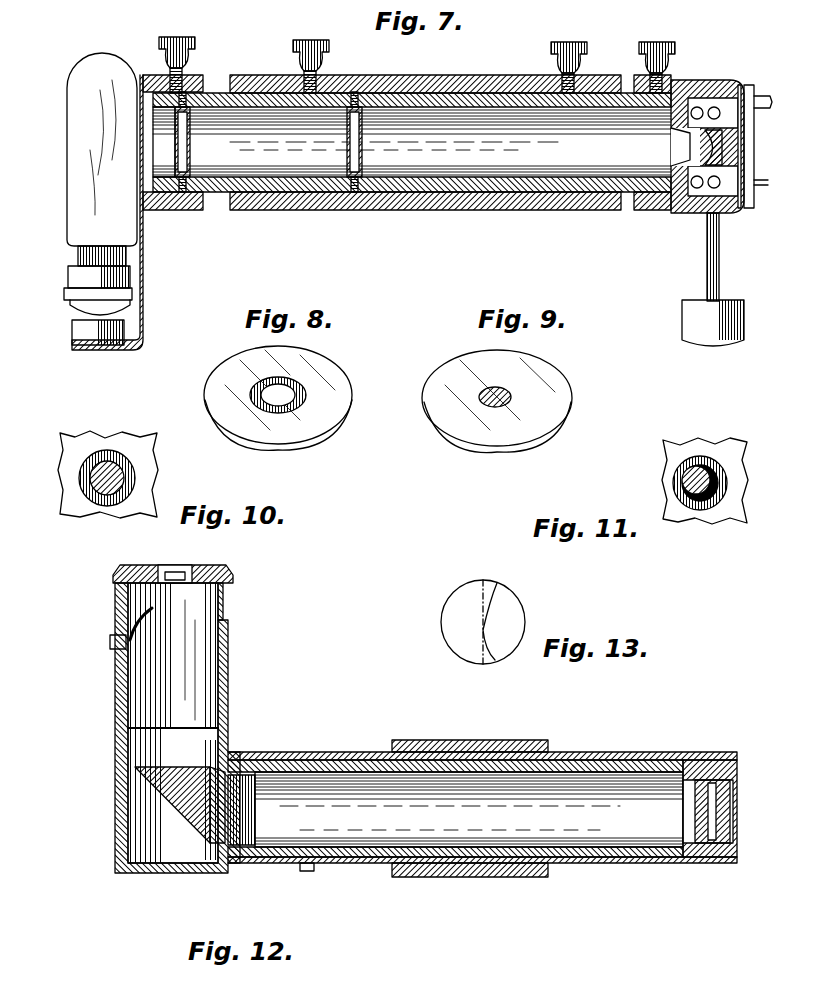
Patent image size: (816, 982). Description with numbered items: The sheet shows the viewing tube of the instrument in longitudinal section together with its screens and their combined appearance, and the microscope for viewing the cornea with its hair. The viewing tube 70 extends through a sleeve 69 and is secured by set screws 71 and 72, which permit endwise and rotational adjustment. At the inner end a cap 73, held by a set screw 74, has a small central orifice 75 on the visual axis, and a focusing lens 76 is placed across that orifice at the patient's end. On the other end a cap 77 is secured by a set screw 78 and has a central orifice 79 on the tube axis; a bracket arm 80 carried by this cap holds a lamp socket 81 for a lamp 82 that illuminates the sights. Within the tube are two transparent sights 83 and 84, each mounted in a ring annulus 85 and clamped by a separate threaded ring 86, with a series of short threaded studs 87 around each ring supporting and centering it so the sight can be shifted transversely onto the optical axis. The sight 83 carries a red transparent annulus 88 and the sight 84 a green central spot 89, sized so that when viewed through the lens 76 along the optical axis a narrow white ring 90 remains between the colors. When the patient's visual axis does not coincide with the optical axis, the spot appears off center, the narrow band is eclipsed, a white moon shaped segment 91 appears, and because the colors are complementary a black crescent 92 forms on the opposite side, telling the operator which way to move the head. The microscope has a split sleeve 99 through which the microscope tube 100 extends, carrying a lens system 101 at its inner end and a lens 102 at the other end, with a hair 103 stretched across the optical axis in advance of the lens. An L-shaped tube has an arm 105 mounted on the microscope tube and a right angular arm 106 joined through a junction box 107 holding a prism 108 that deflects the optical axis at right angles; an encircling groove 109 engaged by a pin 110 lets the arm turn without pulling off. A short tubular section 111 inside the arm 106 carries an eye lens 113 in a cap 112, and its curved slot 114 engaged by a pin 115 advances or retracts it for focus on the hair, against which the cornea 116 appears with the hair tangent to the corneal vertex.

In FIG. 7, the sleeve 69 is at (402, 210).
In FIG. 7, the viewing tube 70 is at (512, 192).
In FIG. 7, the set screw 71 is at (312, 50).
In FIG. 7, the set screw 72 is at (566, 62).
In FIG. 7, the cap 73 is at (655, 210).
In FIG. 7, the set screw 74 is at (660, 55).
In FIG. 7, the central orifice 75 is at (690, 150).
In FIG. 7, the focusing lens 76 is at (726, 148).
In FIG. 7, the cap 77 is at (170, 210).
In FIG. 7, the set screw 78 is at (192, 50).
In FIG. 7, the central orifice 79 is at (150, 145).
In FIG. 7, the bracket arm 80 is at (150, 275).
In FIG. 7, the lamp socket 81 is at (88, 283).
In FIG. 7, the lamp 82 is at (98, 218).
In FIG. 7, the sight 83 is at (160, 150).
In FIG. 8, the sight 83 is at (320, 432).
In FIG. 7, the sight 84 is at (355, 118).
In FIG. 9, the sight 84 is at (510, 440).
In FIG. 10, the sight 84 is at (65, 442).
In FIG. 11, the sight 84 is at (728, 522).
In FIG. 7, the ring annulus 85 is at (180, 160).
In FIG. 7, the threaded ring 86 is at (186, 163).
In FIG. 7, the threaded stud 87 is at (380, 92).
In FIG. 7, the transparent colored annulus 88 is at (186, 150).
In FIG. 8, the transparent colored annulus 88 is at (260, 394).
In FIG. 10, the transparent colored annulus 88 is at (125, 457).
In FIG. 11, the transparent colored annulus 88 is at (690, 498).
In FIG. 7, the central transparent spot 89 is at (360, 150).
In FIG. 9, the central transparent spot 89 is at (500, 397).
In FIG. 10, the central transparent spot 89 is at (110, 487).
In FIG. 11, the central transparent spot 89 is at (702, 474).
In FIG. 10, the narrow ring 90 is at (100, 476).
In FIG. 11, the moon shaped segment 91 is at (680, 480).
In FIG. 11, the black crescent 92 is at (712, 470).
In FIG. 12, the split sleeve 99 is at (455, 877).
In FIG. 12, the microscope tube 100 is at (605, 760).
In FIG. 12, the lens system 101 is at (716, 815).
In FIG. 12, the lens 102 is at (215, 843).
In FIG. 13, the hair 103 is at (470, 660).
In FIG. 12, the hair 103 is at (262, 822).
In FIG. 12, the arm 105 is at (275, 752).
In FIG. 12, the right angular arm 106 is at (228, 680).
In FIG. 12, the junction box 107 is at (145, 847).
In FIG. 12, the prism 108 is at (175, 782).
In FIG. 12, the encircling groove 109 is at (318, 752).
In FIG. 12, the pin 110 is at (305, 871).
In FIG. 12, the short tubular section 111 is at (195, 615).
In FIG. 12, the cap 112 is at (218, 570).
In FIG. 12, the eye lens 113 is at (175, 572).
In FIG. 12, the curved slot 114 is at (148, 610).
In FIG. 12, the pin 115 is at (112, 648).
In FIG. 13, the cornea 116 is at (487, 608).